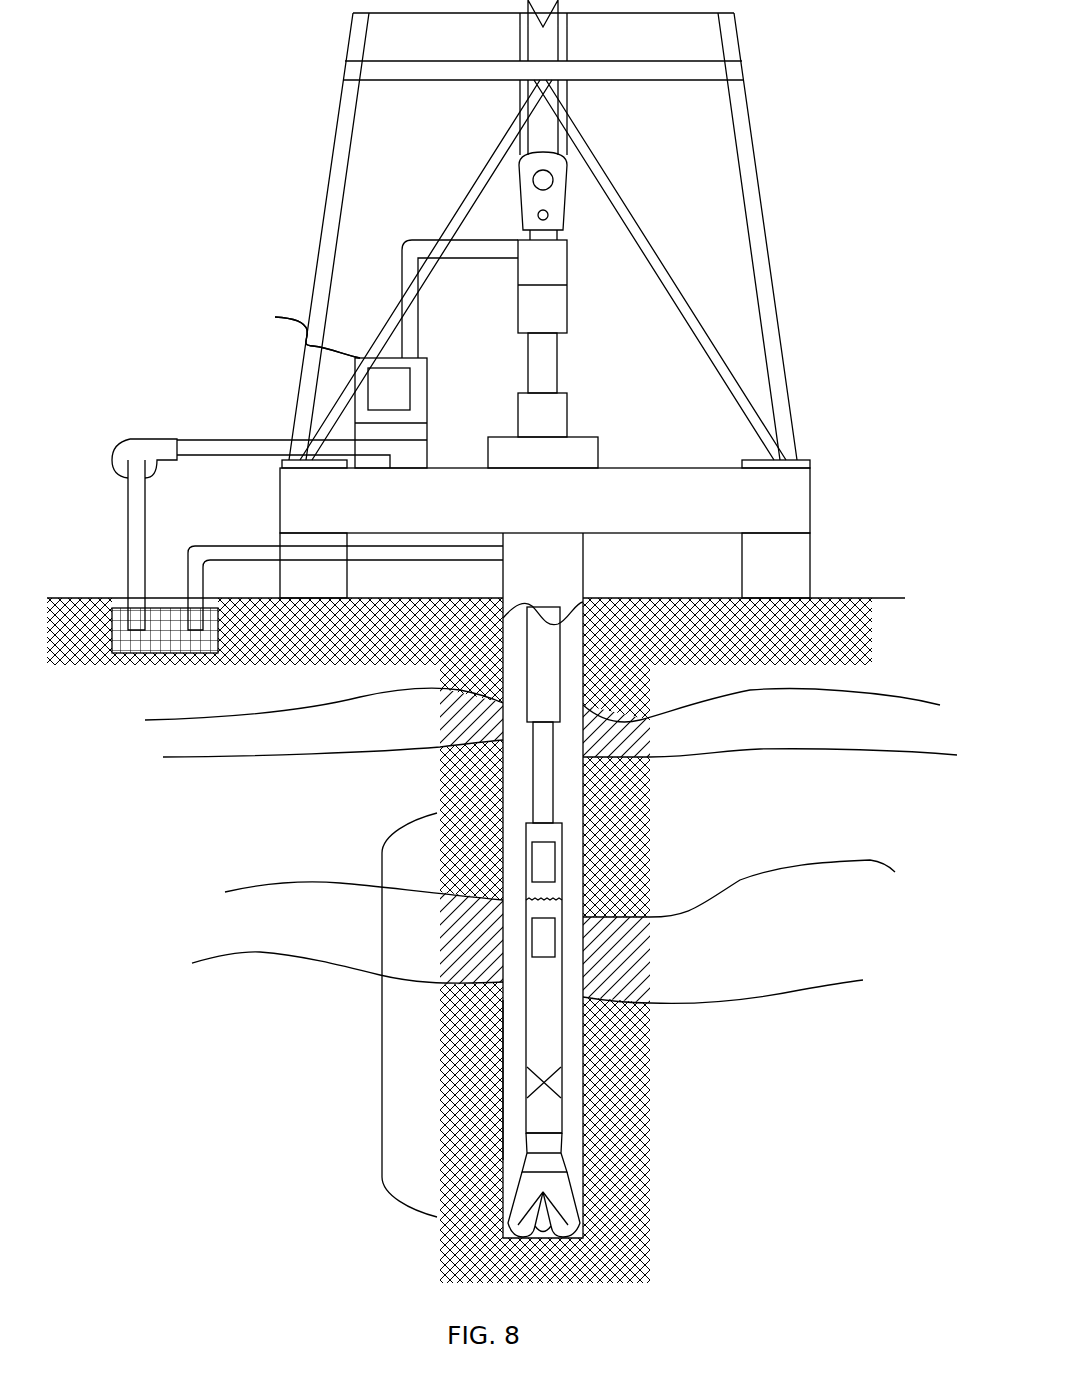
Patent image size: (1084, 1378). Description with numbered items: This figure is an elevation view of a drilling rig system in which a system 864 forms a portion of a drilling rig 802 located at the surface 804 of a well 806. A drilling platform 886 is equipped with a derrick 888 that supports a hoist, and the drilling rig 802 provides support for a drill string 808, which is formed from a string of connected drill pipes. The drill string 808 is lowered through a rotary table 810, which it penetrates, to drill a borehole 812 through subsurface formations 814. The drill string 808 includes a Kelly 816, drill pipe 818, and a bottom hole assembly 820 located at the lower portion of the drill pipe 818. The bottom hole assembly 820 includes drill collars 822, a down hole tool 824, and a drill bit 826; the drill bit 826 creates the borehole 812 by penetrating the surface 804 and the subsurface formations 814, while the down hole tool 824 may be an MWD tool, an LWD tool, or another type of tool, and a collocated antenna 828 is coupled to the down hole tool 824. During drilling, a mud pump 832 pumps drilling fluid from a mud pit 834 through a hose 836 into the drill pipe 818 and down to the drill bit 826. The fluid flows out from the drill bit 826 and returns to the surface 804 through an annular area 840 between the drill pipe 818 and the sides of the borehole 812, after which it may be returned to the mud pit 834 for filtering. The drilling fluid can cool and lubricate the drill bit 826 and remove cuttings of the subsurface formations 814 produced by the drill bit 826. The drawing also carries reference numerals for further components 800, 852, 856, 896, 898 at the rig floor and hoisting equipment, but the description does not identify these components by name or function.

The system 864 is at (200, 90).
The drilling rig 802 is at (587, 230).
The derrick 888 is at (757, 151).
The drilling platform 886 is at (810, 480).
The surface 804 is at (883, 598).
The drilling rig 800 is at (430, 340).
The controller 852 is at (278, 333).
The processor 856 is at (278, 333).
The control unit 896 is at (427, 399).
The Kelly 816 is at (557, 368).
The top drive 898 is at (567, 416).
The rotary table 810 is at (598, 456).
The mud pump 832 is at (130, 439).
The hose 836 is at (247, 441).
The mud pit 834 is at (167, 653).
The well 806 is at (592, 592).
The drill collars 822 is at (560, 633).
The drill pipe 818 is at (553, 785).
The annular area 840 is at (570, 827).
The subsurface formations 814 is at (148, 710).
The bottom hole assembly 820 is at (382, 1015).
The borehole 812 is at (500, 1081).
The drill string 808 is at (603, 1026).
The collocated antenna 828 is at (553, 1072).
The down hole tool 824 is at (550, 1117).
The drill bit 826 is at (555, 1190).